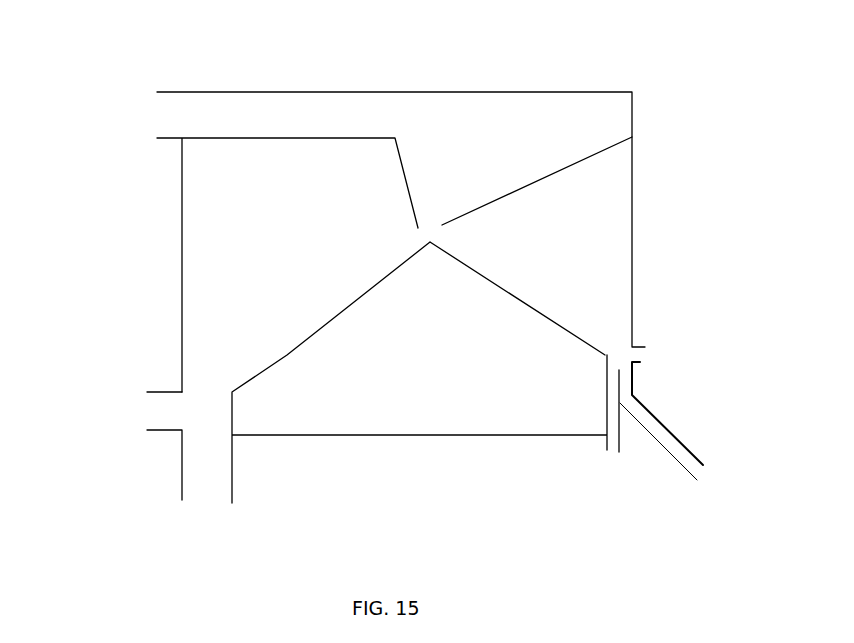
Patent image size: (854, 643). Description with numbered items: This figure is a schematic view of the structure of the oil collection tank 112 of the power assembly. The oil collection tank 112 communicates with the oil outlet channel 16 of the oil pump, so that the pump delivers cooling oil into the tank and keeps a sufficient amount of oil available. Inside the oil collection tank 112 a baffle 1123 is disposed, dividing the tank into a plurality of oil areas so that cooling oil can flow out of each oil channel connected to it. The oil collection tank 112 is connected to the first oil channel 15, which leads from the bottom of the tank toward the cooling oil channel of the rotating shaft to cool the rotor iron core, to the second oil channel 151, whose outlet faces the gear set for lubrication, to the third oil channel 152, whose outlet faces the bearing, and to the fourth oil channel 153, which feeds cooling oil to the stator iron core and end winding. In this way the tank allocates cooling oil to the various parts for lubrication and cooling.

The oil collection tank 112 is at (228, 43).
The oil outlet channel 16 is at (157, 128).
The baffle 1123 is at (538, 180).
The first oil channel 15 is at (195, 472).
The second oil channel 151 is at (610, 448).
The third oil channel 152 is at (646, 358).
The fourth oil channel 153 is at (150, 410).